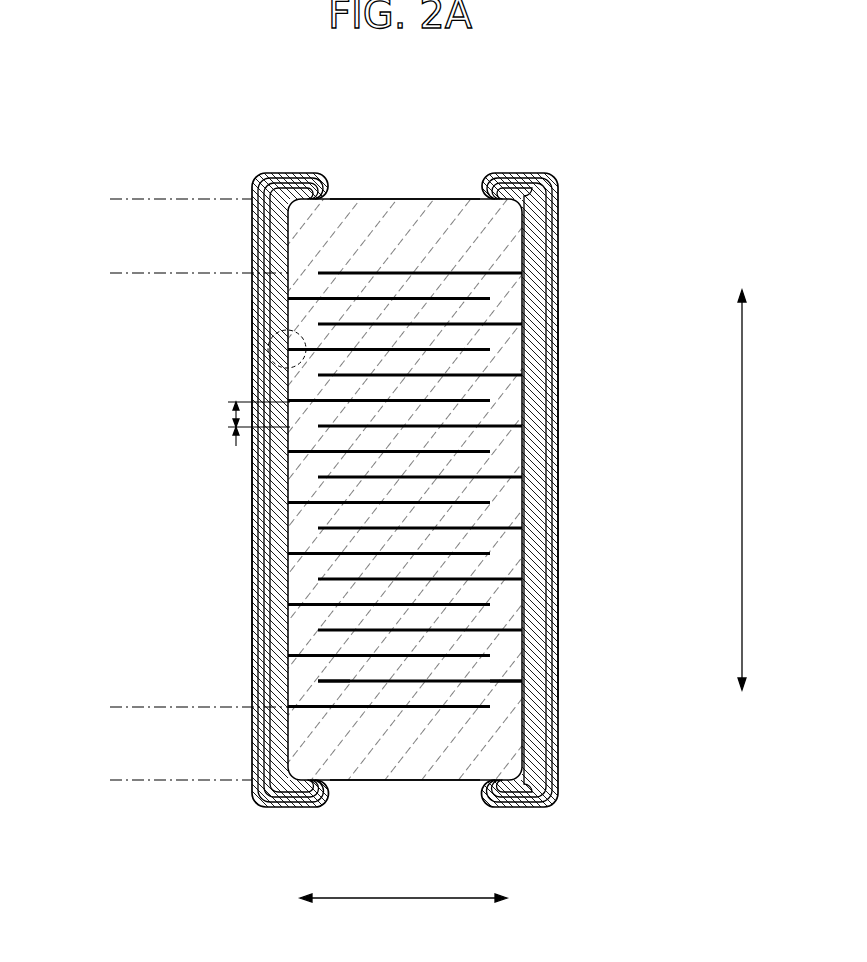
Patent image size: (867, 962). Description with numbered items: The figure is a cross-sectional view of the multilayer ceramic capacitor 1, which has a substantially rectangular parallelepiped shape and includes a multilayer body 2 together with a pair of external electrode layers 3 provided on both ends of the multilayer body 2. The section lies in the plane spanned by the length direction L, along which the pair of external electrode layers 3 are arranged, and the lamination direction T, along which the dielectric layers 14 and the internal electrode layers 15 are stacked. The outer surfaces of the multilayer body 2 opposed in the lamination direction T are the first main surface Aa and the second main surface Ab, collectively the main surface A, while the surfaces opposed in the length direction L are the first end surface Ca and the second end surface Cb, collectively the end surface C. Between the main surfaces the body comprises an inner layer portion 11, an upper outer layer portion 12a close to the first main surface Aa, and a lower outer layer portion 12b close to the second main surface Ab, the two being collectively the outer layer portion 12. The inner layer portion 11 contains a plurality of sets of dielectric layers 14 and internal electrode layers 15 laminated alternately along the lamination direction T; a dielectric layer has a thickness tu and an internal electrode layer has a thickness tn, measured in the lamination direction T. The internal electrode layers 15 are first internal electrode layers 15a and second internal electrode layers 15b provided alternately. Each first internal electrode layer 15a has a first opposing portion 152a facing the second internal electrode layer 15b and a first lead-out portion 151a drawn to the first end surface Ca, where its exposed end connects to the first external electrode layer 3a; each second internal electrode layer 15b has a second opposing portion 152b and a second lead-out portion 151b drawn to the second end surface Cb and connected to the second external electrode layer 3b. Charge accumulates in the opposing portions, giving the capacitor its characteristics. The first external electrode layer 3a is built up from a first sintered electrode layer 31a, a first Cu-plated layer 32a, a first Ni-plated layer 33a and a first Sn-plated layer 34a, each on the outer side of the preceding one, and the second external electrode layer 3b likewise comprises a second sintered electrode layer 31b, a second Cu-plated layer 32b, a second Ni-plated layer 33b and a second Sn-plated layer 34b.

The multilayer ceramic capacitor 1 is at (532, 113).
The multilayer body 2 is at (437, 197).
The external electrode layers 3 is at (442, 422).
The first external electrode layer 3a is at (188, 77).
The second external electrode layer 3b is at (648, 280).
The first sintered electrode layer 31a is at (257, 193).
The first Cu-plated layer 32a is at (275, 182).
The first Ni-plated layer 33a is at (293, 187).
The first Sn-plated layer 34a is at (313, 173).
The second sintered electrode layer 31b is at (533, 303).
The second Cu-plated layer 32b is at (541, 331).
The second Ni-plated layer 33b is at (549, 362).
The second Sn-plated layer 34b is at (556, 390).
The inner layer portion 11 is at (110, 273).
The outer layer portion 12 is at (159, 492).
The upper outer layer portion 12a is at (110, 199).
The lower outer layer portion 12b is at (110, 707).
The dielectric layer 14 is at (487, 597).
The internal electrode layer 15 is at (455, 807).
The first internal electrode layer 15a is at (150, 890).
The second internal electrode layer 15b is at (653, 715).
The first lead-out portion 151a is at (295, 715).
The first opposing portion 152a is at (355, 712).
The second lead-out portion 151b is at (503, 685).
The second opposing portion 152b is at (467, 685).
The main surface A is at (414, 492).
The first main surface Aa is at (370, 198).
The second main surface Ab is at (445, 787).
The end surface C is at (411, 500).
The first end surface Ca is at (262, 478).
The second end surface Cb is at (540, 497).
The length direction L is at (403, 913).
The lamination direction T is at (751, 490).
The thickness of the dielectric layer tu is at (230, 402).
The thickness of the internal electrode layer tn is at (230, 427).